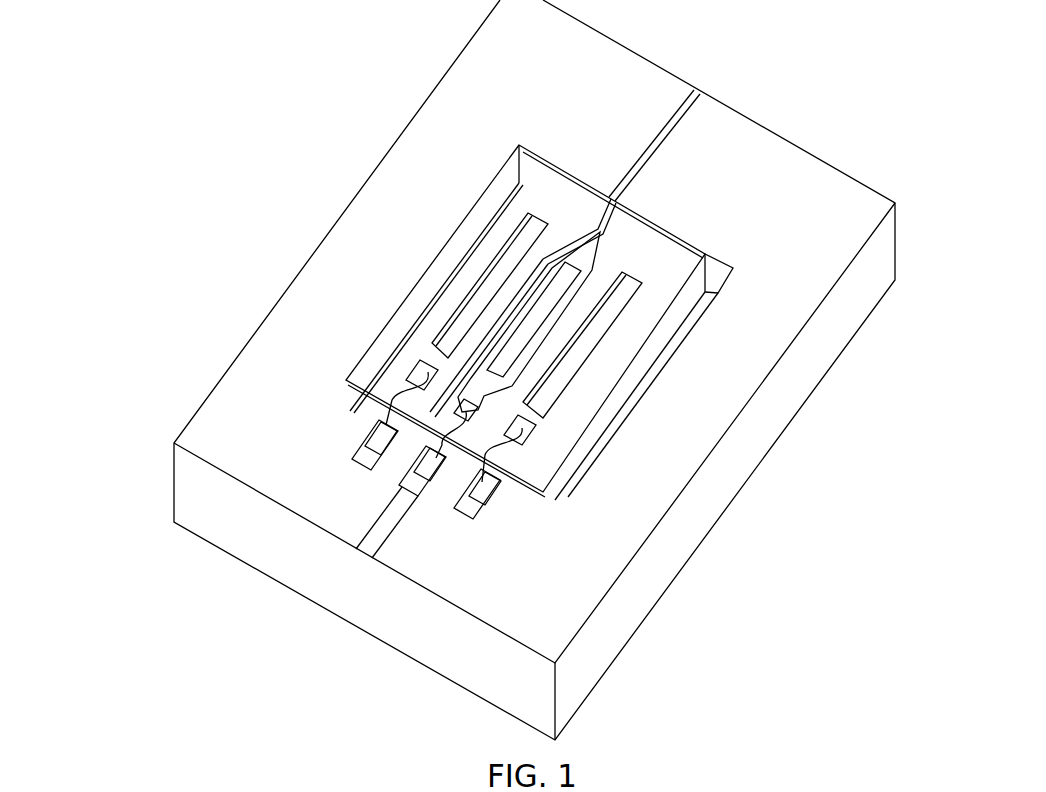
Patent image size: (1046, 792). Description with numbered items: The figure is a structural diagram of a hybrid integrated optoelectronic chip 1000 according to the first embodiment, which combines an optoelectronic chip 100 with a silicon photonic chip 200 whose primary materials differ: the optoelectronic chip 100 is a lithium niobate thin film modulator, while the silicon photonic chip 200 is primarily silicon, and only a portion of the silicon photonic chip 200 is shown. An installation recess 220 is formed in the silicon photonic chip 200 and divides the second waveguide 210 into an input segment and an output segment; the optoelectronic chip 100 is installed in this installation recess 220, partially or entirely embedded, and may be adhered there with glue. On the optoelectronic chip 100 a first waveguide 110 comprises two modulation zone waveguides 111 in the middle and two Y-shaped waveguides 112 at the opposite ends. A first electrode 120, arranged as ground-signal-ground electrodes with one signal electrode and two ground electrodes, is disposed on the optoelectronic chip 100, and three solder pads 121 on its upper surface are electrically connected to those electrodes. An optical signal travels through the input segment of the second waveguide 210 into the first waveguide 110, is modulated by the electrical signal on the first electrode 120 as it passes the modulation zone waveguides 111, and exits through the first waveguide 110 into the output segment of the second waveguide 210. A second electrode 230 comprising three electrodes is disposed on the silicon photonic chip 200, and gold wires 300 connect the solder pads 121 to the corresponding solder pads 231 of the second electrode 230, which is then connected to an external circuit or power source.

The hybrid integrated optoelectronic chip 1000 is at (93, 28).
The optoelectronic chip 100 is at (676, 265).
The first waveguide 110 is at (590, 105).
The modulation zone waveguide 111 is at (541, 258).
The Y-shaped waveguide 112 is at (574, 236).
The first electrode 120 is at (497, 263).
The solder pad 121 is at (418, 363).
The silicon photonic chip 200 is at (612, 50).
The second waveguide 210 is at (657, 158).
The installation recess 220 is at (713, 262).
The second electrode 230 is at (367, 440).
The solder pad 231 is at (373, 407).
The gold wire 300 is at (386, 400).